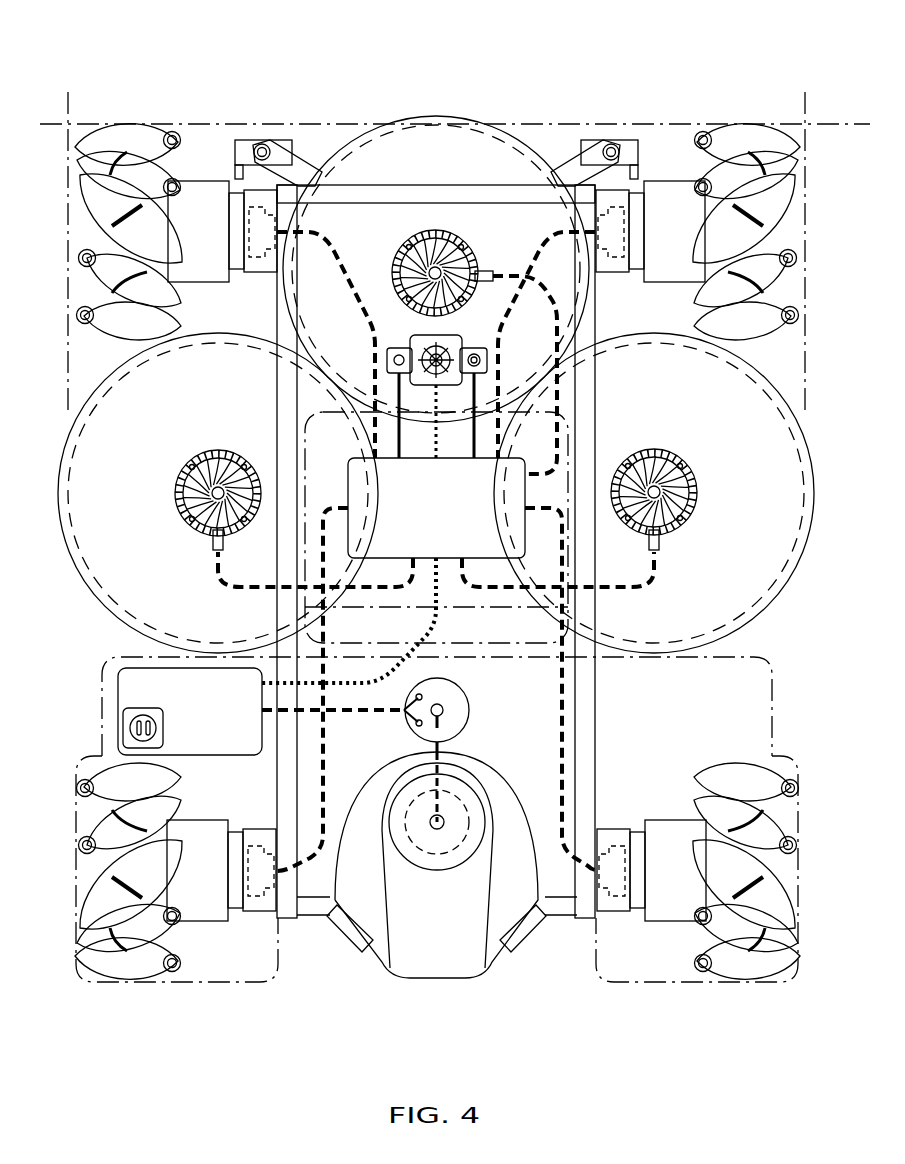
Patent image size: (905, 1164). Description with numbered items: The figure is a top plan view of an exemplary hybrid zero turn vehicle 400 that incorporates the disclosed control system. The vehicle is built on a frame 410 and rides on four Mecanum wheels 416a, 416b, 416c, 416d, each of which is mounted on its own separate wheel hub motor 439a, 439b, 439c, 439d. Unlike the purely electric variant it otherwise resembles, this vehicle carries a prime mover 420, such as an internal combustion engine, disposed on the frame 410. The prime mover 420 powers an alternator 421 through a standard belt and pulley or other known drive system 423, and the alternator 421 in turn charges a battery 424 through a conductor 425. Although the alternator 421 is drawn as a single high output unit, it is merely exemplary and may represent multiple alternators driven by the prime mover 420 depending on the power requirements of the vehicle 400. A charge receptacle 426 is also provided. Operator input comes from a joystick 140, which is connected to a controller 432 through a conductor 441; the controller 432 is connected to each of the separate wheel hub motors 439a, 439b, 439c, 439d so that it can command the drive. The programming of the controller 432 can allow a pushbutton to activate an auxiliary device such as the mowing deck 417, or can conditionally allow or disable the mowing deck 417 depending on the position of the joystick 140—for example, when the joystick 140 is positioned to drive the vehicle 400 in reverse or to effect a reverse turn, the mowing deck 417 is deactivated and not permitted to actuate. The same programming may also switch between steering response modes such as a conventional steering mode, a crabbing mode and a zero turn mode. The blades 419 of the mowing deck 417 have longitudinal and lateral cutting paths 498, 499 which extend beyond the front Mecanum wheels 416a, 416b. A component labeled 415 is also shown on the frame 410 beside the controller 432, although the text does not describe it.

The hybrid zero turn vehicle 400 is at (250, 87).
The longitudinal cutting path 498 is at (70, 101).
The lateral cutting path 499 is at (300, 123).
The frame 410 is at (278, 437).
The battery 415 is at (317, 418).
The Mecanum wheel 416a is at (150, 132).
The Mecanum wheel 416b is at (724, 133).
The Mecanum wheel 416c is at (149, 966).
The Mecanum wheel 416d is at (723, 966).
The mowing deck 417 is at (440, 114).
The blades 419 is at (523, 134).
The prime mover 420 is at (457, 926).
The alternator 421 is at (450, 695).
The drive system 423 is at (445, 748).
The battery 424 is at (191, 703).
The conductor 425 is at (364, 715).
The charge receptacle 426 is at (165, 728).
The controller 432 is at (418, 536).
The wheel hub motor 439a is at (172, 224).
The wheel hub motor 439b is at (648, 224).
The wheel hub motor 439c is at (172, 892).
The wheel hub motor 439d is at (648, 892).
The joystick 140 is at (440, 335).
The conductor 441 is at (431, 442).